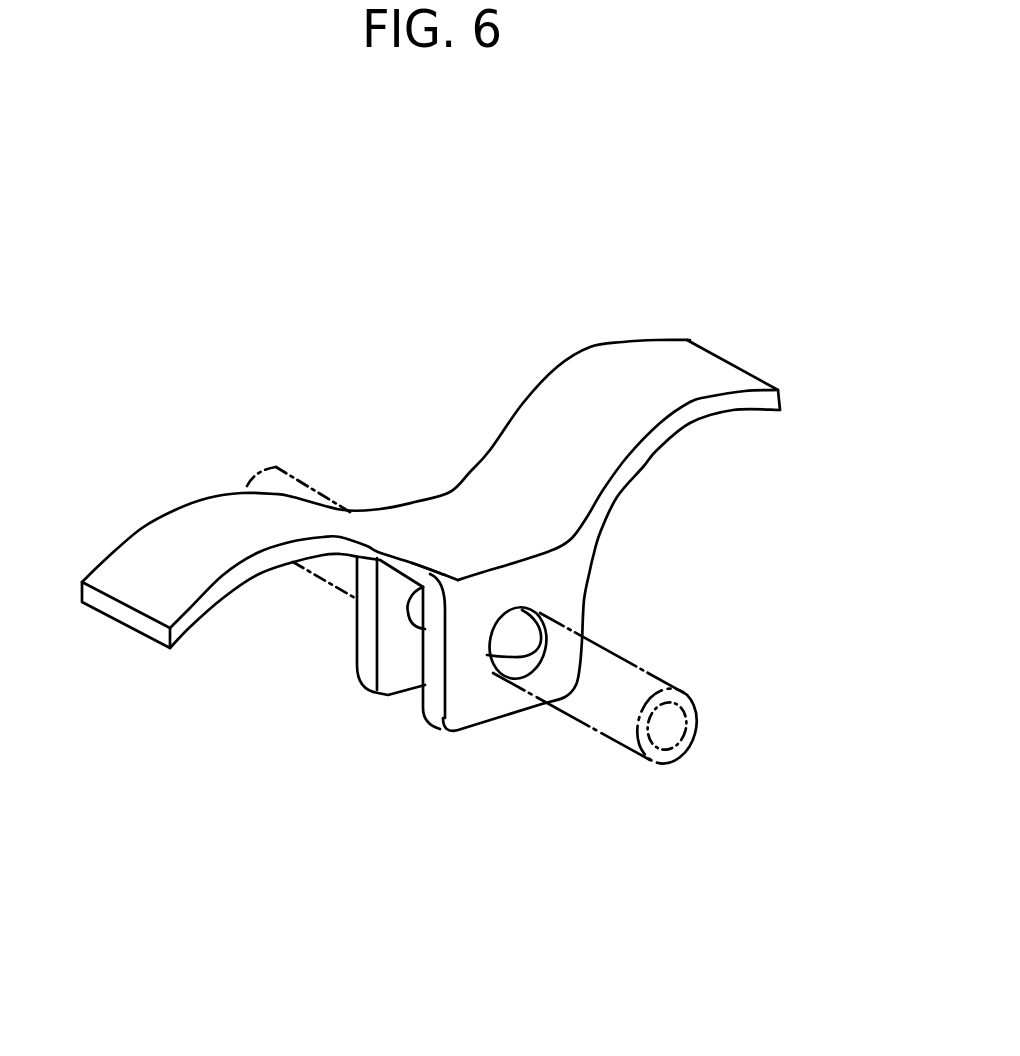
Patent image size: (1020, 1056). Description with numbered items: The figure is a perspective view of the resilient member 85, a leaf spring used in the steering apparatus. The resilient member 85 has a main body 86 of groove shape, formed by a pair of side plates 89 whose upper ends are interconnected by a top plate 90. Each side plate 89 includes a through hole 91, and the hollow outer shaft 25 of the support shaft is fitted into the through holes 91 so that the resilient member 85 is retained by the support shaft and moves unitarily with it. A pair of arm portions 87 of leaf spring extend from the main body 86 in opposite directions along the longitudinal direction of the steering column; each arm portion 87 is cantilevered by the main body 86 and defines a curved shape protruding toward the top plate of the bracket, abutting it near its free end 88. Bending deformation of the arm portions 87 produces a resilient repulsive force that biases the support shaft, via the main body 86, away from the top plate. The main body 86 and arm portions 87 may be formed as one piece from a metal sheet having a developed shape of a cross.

The resilient member 85 is at (678, 502).
The main body 86 is at (452, 530).
The arm portions 87 is at (230, 533).
The end tab portion 88 is at (158, 582).
The side plates 89 is at (391, 668).
The top plate 90 is at (513, 547).
The through hole 91 is at (412, 620).
The outer shaft 25 is at (625, 656).